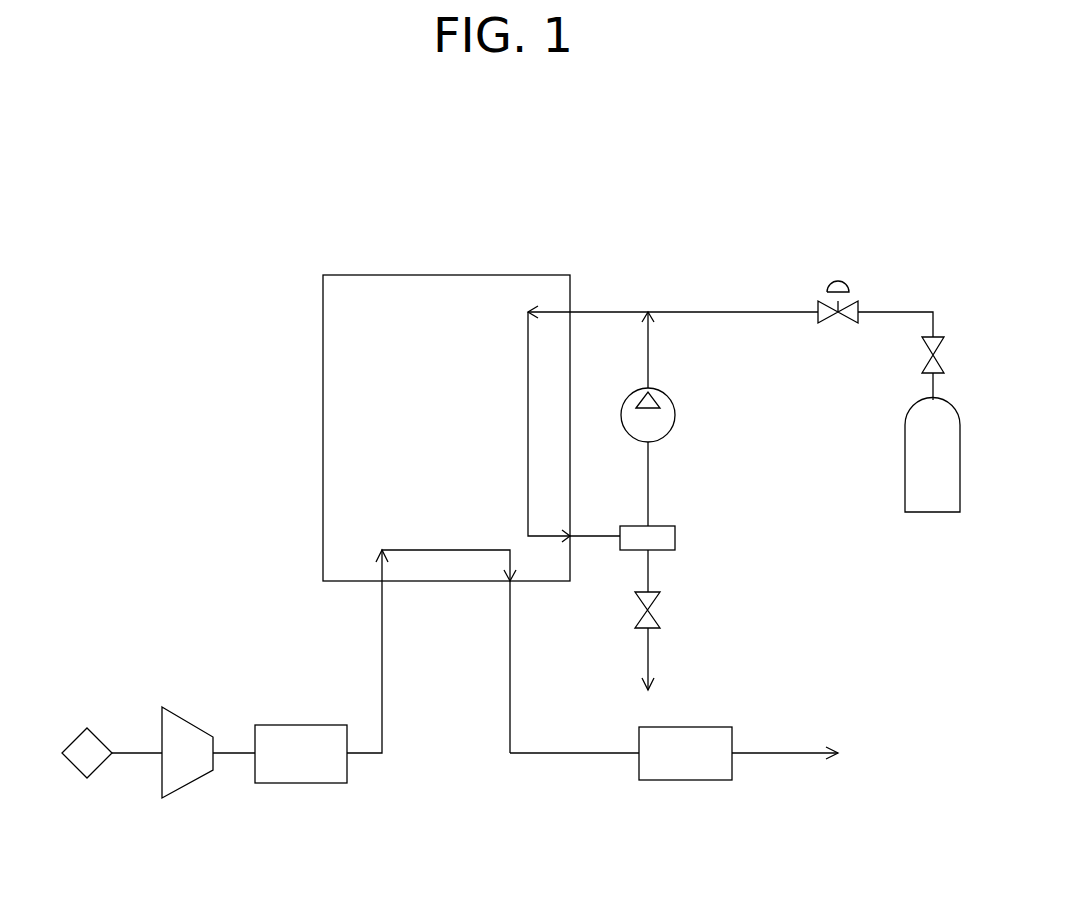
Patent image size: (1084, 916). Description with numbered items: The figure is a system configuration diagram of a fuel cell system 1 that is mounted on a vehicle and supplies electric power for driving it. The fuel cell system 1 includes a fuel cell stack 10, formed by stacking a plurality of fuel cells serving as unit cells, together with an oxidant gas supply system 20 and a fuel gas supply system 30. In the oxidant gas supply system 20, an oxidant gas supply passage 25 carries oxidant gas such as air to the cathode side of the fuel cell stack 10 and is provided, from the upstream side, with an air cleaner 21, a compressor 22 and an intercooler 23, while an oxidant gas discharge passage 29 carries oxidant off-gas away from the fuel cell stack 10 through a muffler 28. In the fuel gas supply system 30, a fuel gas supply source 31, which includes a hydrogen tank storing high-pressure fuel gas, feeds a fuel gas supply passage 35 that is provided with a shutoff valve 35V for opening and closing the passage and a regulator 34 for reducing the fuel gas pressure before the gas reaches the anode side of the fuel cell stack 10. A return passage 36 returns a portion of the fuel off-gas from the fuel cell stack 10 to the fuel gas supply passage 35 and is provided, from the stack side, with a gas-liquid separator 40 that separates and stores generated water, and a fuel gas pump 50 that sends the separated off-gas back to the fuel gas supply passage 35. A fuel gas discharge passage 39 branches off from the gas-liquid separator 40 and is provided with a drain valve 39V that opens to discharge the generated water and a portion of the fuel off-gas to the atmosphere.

The fuel cell system 1 is at (865, 220).
The fuel cell stack 10 is at (343, 275).
The oxidant gas supply system 20 is at (218, 638).
The air cleaner 21 is at (80, 740).
The compressor 22 is at (190, 777).
The intercooler 23 is at (302, 772).
The oxidant gas supply passage 25 is at (382, 660).
The muffler 28 is at (680, 772).
The oxidant gas discharge passage 29 is at (510, 660).
The fuel gas supply system 30 is at (798, 543).
The fuel gas supply source 31 is at (905, 480).
The regulator 34 is at (838, 323).
The fuel gas supply passage 35 is at (660, 312).
The shutoff valve 35V is at (925, 365).
The return passage 36 is at (648, 480).
The fuel gas discharge passage 39 is at (648, 665).
The drain valve 39V is at (654, 612).
The gas-liquid separator 40 is at (675, 540).
The fuel gas pump 50 is at (675, 418).